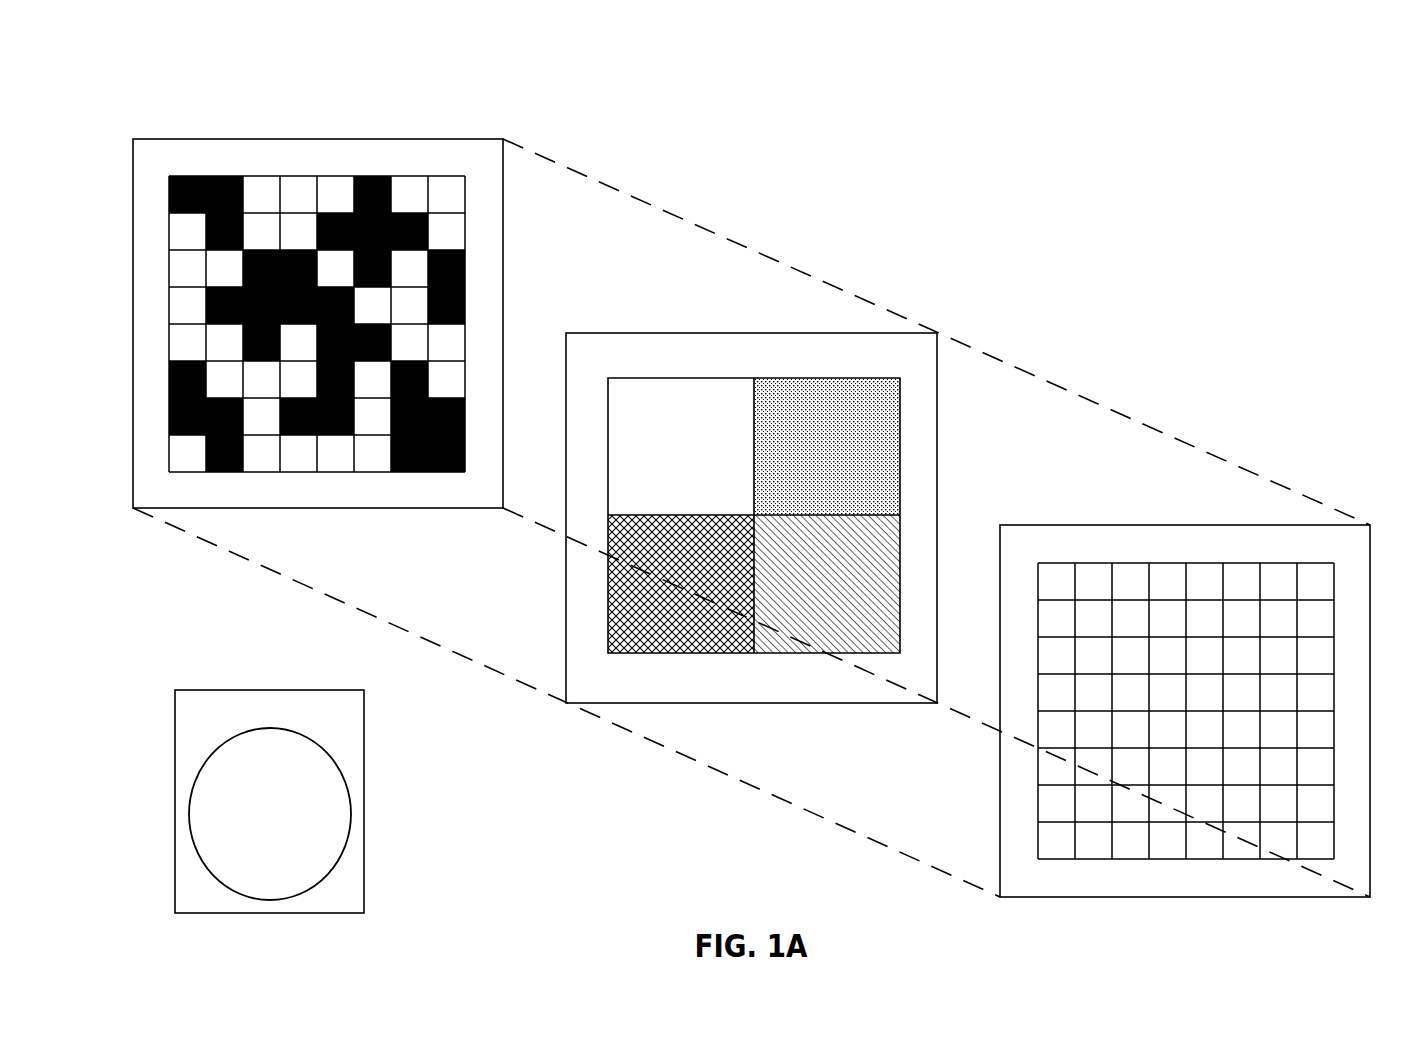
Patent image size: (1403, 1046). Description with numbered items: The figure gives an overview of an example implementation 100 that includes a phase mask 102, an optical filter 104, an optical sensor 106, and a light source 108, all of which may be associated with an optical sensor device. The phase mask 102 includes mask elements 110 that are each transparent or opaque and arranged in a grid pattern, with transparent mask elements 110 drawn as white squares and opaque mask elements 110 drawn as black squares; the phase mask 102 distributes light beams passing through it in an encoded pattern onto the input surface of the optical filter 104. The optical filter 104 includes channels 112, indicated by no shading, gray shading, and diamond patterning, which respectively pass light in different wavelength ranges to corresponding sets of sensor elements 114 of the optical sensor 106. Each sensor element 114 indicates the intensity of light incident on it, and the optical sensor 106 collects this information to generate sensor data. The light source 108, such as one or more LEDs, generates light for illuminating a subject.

The example implementation 100 is at (268, 69).
The phase mask 102 is at (403, 171).
The optical filter 104 is at (838, 364).
The optical sensor 106 is at (1282, 557).
The light source 108 is at (357, 723).
The mask elements 110 is at (469, 263).
The channels 112 is at (785, 481).
The sensor elements 114 is at (1096, 842).